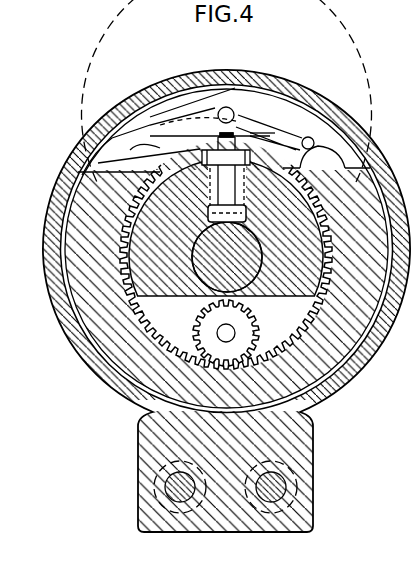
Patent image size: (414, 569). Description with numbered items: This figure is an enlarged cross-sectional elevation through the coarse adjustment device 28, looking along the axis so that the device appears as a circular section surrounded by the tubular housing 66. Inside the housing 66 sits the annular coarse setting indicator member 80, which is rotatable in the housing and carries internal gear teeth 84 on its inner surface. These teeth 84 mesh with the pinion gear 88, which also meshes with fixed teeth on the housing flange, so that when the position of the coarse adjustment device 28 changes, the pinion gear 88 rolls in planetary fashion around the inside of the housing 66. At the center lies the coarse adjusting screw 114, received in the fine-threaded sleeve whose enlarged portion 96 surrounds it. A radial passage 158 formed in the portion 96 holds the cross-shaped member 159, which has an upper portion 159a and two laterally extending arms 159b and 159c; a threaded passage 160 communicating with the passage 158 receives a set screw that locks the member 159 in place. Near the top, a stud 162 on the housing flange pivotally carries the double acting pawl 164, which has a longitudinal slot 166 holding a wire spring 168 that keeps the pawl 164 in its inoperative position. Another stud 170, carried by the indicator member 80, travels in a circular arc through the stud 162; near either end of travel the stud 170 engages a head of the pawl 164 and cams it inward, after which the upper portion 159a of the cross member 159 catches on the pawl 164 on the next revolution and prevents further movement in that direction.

The coarse adjustment device 28 is at (100, 421).
The housing 66 is at (80, 365).
The coarse setting indicator member 80 is at (348, 397).
The internal gear teeth 84 is at (165, 338).
The pinion gear 88 is at (250, 333).
The enlarged portion 96 is at (226, 227).
The coarse adjusting screw 114 is at (232, 262).
The radial passage 158 is at (218, 188).
The cross-shaped member 159 is at (202, 157).
The upper portion 159a is at (250, 133).
The laterally extending arm 159b is at (138, 146).
The laterally extending arm 159c is at (356, 192).
The threaded passage 160 is at (246, 200).
The stud 162 is at (232, 108).
The double acting ratchet member or pawl 164 is at (265, 110).
The longitudinal slot 166 is at (190, 80).
The wire spring 168 is at (143, 118).
The stud 170 is at (316, 143).